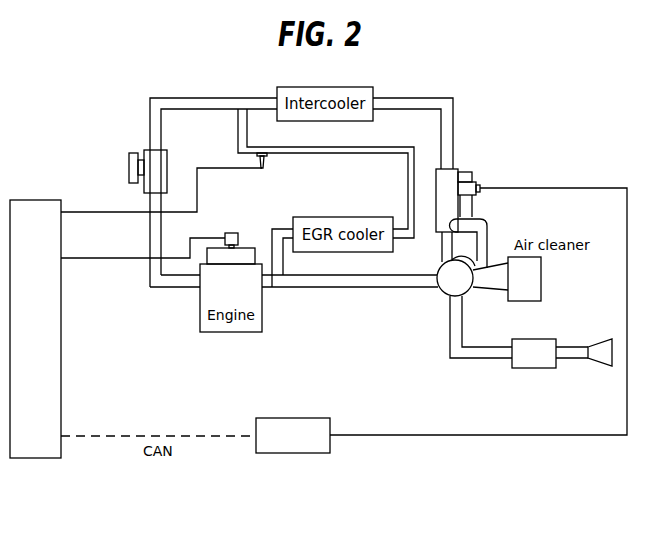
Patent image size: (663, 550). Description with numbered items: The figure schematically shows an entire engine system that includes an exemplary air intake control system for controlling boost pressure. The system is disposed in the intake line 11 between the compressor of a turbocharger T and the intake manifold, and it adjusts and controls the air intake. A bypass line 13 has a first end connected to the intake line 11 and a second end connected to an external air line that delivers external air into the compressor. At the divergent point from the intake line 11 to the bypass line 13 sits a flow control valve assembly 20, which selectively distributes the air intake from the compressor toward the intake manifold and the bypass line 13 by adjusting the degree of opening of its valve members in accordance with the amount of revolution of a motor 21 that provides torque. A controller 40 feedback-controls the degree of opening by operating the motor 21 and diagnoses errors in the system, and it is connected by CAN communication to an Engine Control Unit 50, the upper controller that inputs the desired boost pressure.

The intake line 11 is at (443, 245).
The turbocharger T is at (440, 294).
The flow control valve assembly 20 is at (471, 167).
The motor 21 is at (478, 177).
The bypass line 13 is at (487, 223).
The controller 40 is at (295, 450).
The Engine Control Unit (ECU) 50 is at (39, 452).